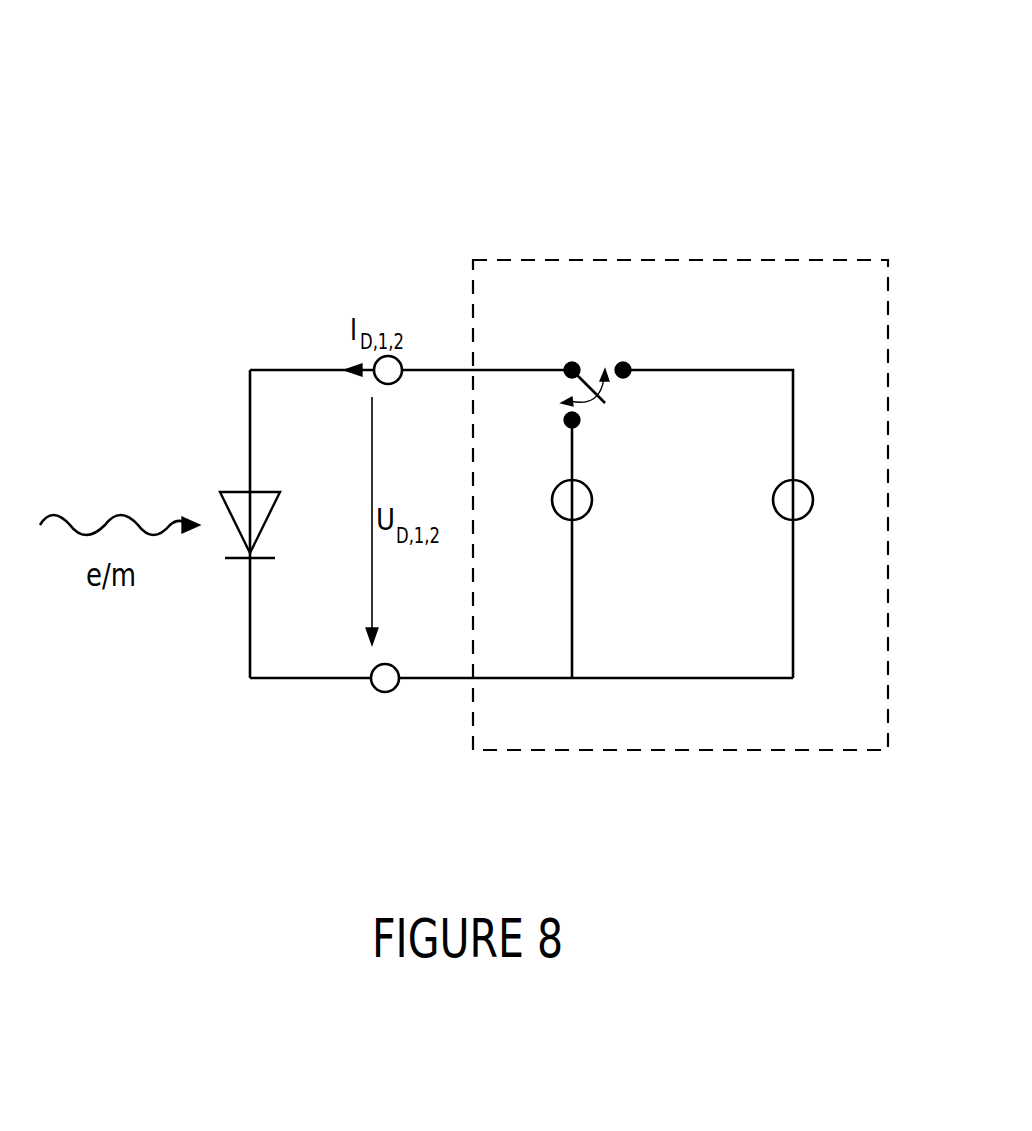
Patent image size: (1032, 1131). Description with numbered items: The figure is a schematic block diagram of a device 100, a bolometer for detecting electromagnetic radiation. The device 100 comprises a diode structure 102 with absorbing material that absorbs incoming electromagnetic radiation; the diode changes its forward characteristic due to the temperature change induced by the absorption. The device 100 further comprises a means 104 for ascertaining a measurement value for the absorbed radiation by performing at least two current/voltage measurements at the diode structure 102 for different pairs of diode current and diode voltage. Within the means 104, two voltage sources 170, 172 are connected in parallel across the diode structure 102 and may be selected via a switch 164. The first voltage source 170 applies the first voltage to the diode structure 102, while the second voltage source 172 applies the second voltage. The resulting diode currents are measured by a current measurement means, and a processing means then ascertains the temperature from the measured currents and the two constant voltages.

The device 100 is at (702, 124).
The diode structure 102 is at (242, 492).
The means for ascertaining a measurement value 104 is at (775, 752).
The switch 164 is at (597, 350).
The first voltage source 170 is at (593, 500).
The second voltage source 172 is at (783, 518).